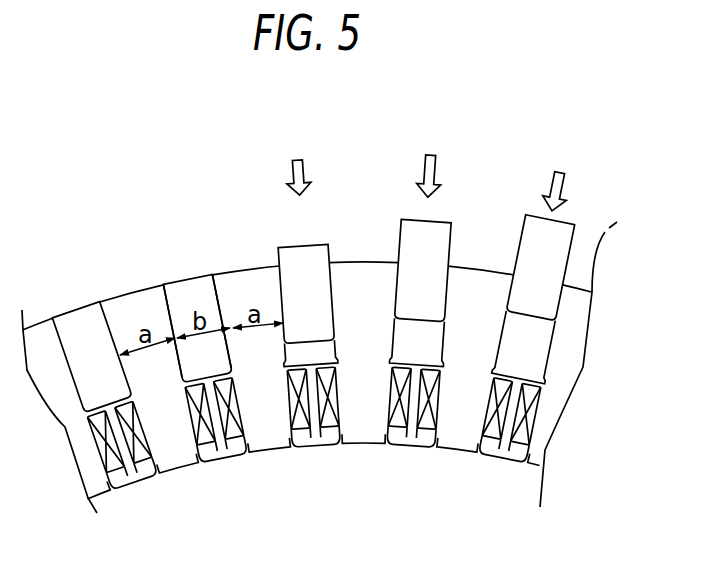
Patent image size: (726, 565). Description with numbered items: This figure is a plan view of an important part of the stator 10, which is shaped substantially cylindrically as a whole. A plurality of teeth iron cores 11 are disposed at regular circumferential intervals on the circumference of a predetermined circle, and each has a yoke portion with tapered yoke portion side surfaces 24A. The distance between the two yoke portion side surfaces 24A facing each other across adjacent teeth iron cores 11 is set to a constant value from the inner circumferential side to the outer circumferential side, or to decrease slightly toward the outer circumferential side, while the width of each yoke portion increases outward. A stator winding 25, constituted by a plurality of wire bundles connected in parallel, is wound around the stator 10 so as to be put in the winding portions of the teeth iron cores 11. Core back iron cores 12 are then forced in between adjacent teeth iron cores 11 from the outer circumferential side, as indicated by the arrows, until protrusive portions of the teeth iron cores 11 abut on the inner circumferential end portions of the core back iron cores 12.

The stator 10 is at (612, 188).
The teeth iron core 11 is at (113, 310).
The core back iron core 12 is at (190, 288).
The yoke portion side surface 24A is at (173, 290).
The stator winding 25 is at (112, 470).